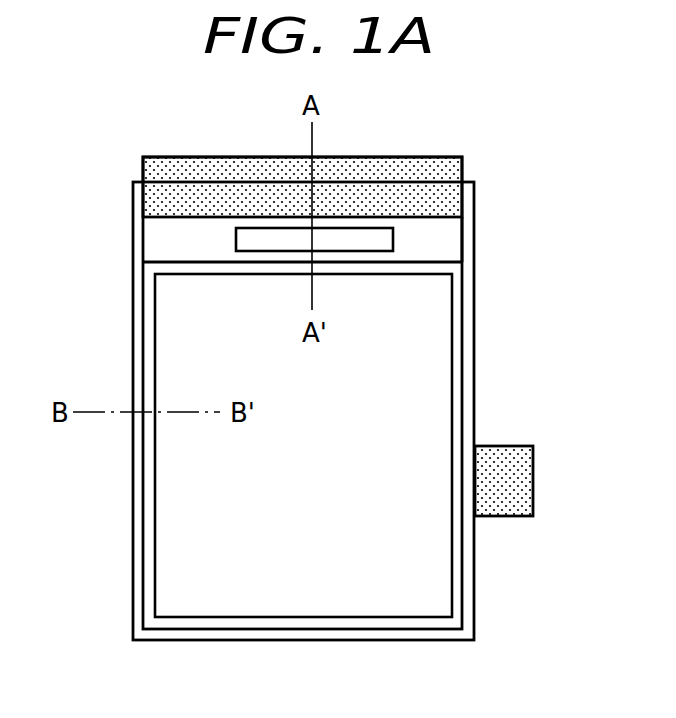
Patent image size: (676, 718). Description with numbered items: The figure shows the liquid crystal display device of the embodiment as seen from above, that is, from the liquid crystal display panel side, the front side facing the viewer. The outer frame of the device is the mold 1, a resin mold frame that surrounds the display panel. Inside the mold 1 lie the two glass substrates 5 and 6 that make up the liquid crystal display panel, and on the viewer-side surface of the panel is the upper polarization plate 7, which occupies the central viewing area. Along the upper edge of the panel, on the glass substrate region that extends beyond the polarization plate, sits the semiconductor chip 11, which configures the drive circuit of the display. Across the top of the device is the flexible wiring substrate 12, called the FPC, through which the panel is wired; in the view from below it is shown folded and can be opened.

The mold 1 is at (476, 368).
The glass substrate 5 is at (460, 293).
The glass substrate 6 is at (460, 245).
The upper polarization plate 7 is at (442, 350).
The semiconductor chip 11 is at (382, 234).
The flexible wiring substrate 12 is at (199, 167).